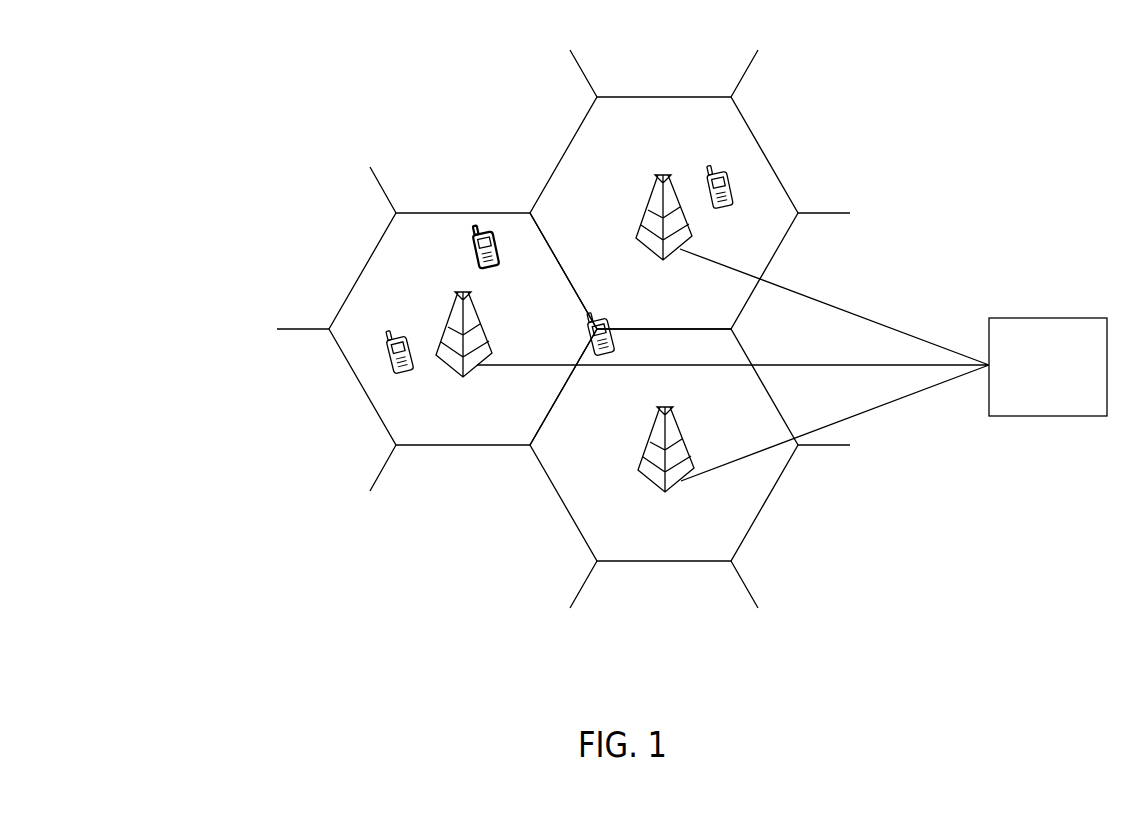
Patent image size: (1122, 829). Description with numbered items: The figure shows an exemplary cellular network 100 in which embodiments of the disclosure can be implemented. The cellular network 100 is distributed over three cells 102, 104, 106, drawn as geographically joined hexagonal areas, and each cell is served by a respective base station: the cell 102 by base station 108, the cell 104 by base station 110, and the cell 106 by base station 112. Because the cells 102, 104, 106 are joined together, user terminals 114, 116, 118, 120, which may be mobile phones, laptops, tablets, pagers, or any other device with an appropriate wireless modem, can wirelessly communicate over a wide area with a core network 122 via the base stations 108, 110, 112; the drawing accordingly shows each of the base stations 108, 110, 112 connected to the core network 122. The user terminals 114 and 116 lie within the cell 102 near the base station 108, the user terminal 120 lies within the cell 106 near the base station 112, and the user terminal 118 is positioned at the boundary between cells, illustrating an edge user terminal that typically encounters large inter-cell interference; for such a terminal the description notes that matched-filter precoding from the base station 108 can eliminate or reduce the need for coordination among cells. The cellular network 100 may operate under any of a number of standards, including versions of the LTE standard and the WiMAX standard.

The cellular network 100 is at (255, 616).
The cell 102 is at (355, 382).
The cell 104 is at (772, 503).
The cell 106 is at (765, 146).
The base station 108 is at (478, 326).
The base station 110 is at (650, 441).
The base station 112 is at (648, 206).
The user terminal 114 is at (474, 243).
The user terminal 116 is at (408, 338).
The user terminal 118 is at (605, 313).
The user terminal 120 is at (727, 172).
The core network 122 is at (792, 365).